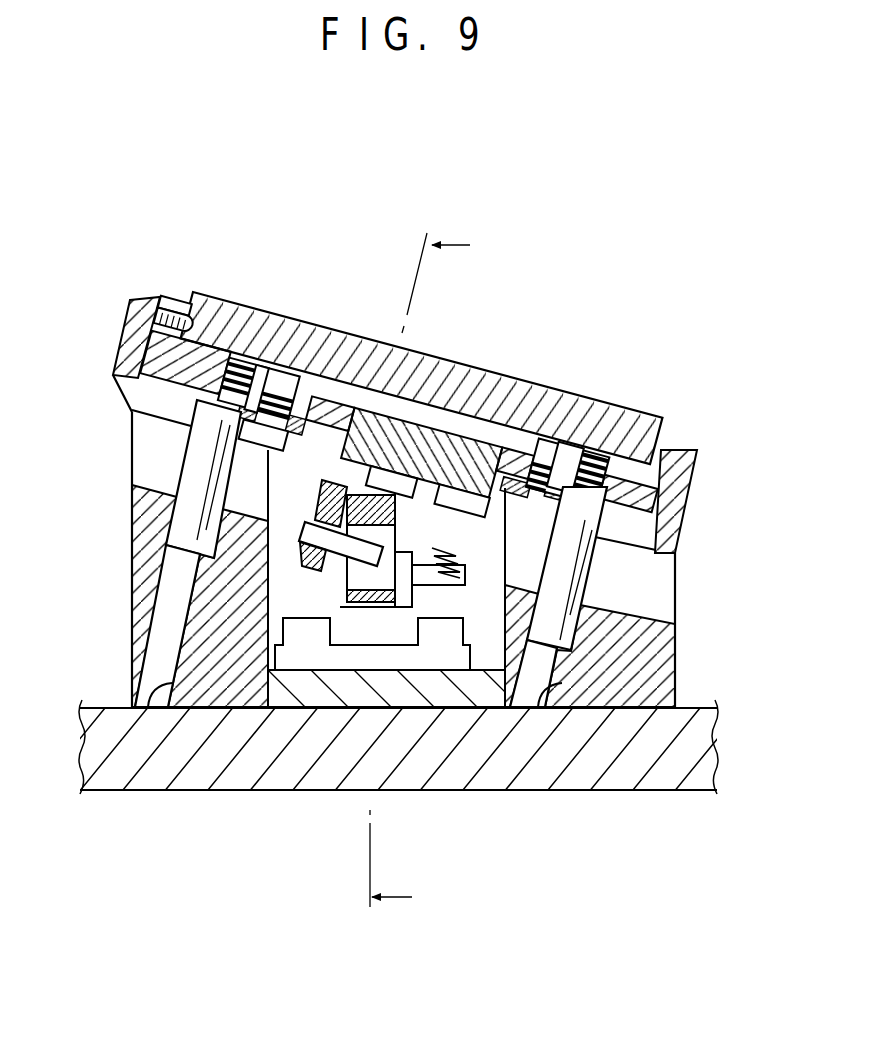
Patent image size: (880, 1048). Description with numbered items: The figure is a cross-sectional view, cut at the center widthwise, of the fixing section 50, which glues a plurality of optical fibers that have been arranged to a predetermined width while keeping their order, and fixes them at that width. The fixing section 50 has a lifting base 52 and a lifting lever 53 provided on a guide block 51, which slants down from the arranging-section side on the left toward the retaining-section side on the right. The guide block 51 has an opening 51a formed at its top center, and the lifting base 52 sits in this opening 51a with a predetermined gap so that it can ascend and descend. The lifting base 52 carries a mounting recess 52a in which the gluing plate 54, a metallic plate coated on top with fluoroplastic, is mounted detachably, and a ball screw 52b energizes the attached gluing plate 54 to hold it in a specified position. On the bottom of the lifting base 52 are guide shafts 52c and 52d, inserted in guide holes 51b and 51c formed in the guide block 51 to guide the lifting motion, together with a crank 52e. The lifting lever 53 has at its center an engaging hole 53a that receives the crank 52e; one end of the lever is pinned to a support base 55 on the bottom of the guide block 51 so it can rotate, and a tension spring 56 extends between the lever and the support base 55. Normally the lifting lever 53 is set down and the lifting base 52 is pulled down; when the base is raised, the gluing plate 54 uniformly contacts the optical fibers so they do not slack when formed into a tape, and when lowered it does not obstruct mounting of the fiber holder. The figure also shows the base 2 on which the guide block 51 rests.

The base 2 is at (280, 776).
The fixing section 50 is at (565, 342).
The guide block 51 is at (133, 572).
The opening 51a is at (677, 450).
The guide hole 51b is at (160, 692).
The guide hole 51c is at (548, 692).
The lifting base 52 is at (181, 294).
The mounting recess 52a is at (648, 460).
The ball screw 52b is at (163, 295).
The guide shaft 52c is at (190, 463).
The guide shaft 52d is at (577, 555).
The crank 52e is at (327, 520).
The lifting lever 53 is at (398, 510).
The engaging hole 53a is at (347, 586).
The gluing plate 54 is at (312, 335).
The support base 55 is at (412, 658).
The tension spring 56 is at (456, 552).